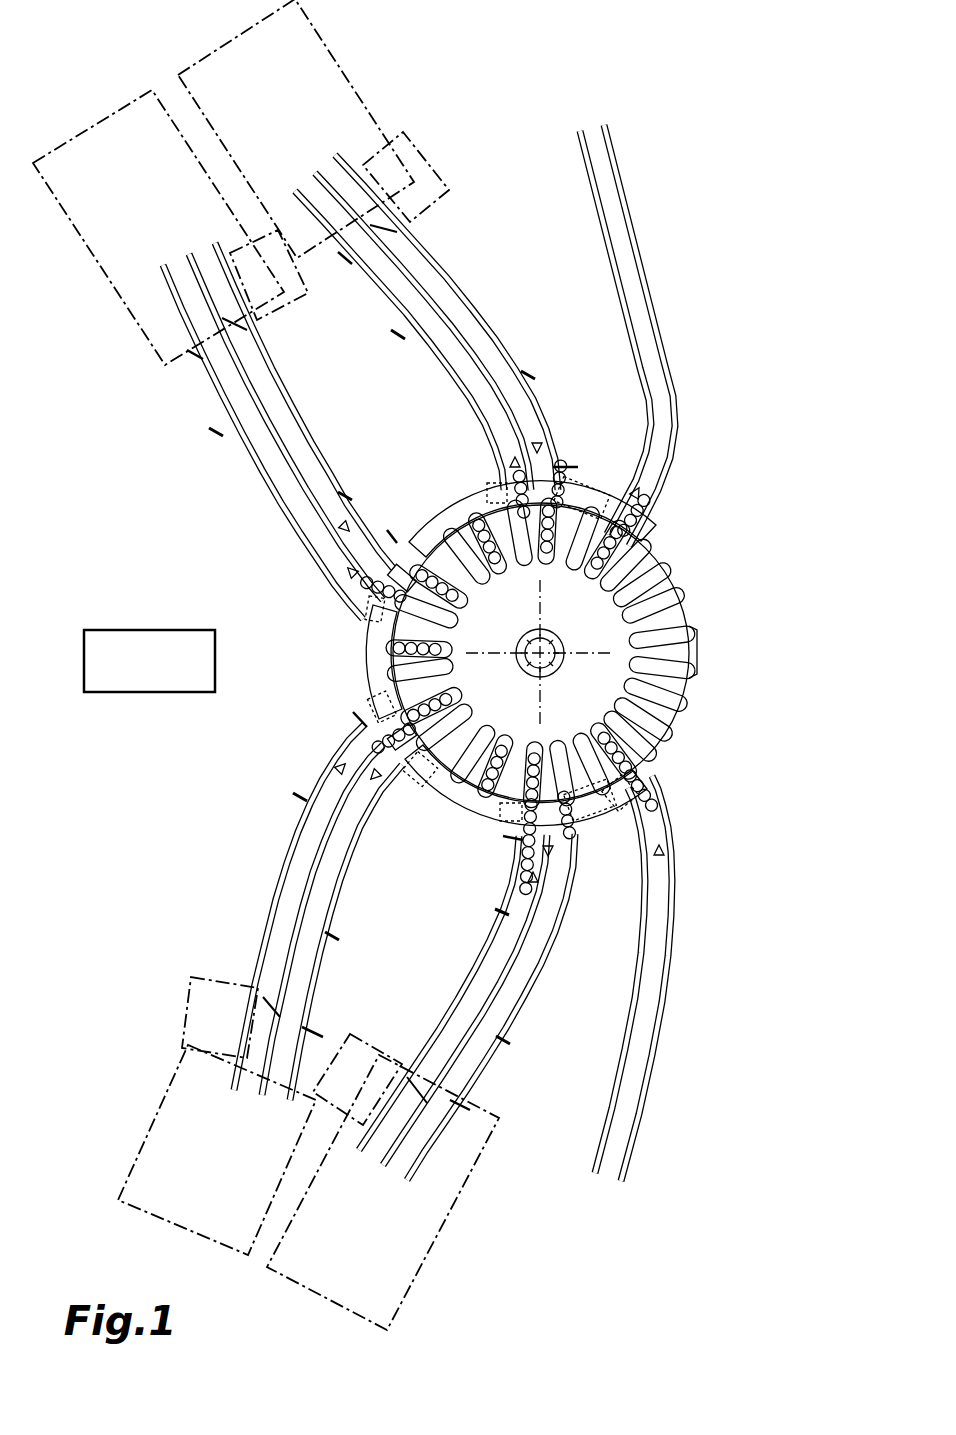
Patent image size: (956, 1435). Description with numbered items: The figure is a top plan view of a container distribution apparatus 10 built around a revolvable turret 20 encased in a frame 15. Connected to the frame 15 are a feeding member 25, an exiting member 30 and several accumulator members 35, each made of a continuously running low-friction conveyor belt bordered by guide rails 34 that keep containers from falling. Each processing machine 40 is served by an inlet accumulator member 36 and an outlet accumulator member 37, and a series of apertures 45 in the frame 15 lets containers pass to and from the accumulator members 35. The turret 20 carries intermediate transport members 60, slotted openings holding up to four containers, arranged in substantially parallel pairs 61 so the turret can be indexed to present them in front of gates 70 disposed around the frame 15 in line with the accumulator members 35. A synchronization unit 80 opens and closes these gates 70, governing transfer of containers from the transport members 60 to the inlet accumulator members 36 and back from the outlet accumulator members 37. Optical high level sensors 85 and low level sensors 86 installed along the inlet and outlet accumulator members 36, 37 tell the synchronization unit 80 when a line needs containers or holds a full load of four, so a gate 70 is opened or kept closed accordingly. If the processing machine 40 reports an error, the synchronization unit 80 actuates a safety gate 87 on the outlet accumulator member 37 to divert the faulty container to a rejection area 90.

The container distribution apparatus 10 is at (258, 589).
The frame 15 is at (379, 655).
The revolvable turret 20 is at (546, 676).
The feeding member 25 is at (668, 880).
The exiting member 30 is at (658, 370).
The guide rails 34 is at (523, 942).
The accumulator members 35 is at (298, 862).
The inlet accumulator member 36 is at (538, 952).
The outlet accumulator member 37 is at (503, 965).
The processing machine 40 is at (277, 120).
The apertures 45 is at (400, 565).
The intermediate transport members 60 is at (657, 580).
The pairs 61 is at (698, 650).
The gates 70 is at (500, 492).
The synchronization unit 80 is at (137, 674).
The high level sensor 85 is at (533, 372).
The low level sensor 86 is at (345, 262).
The safety gate 87 is at (400, 233).
The rejection area 90 is at (396, 194).